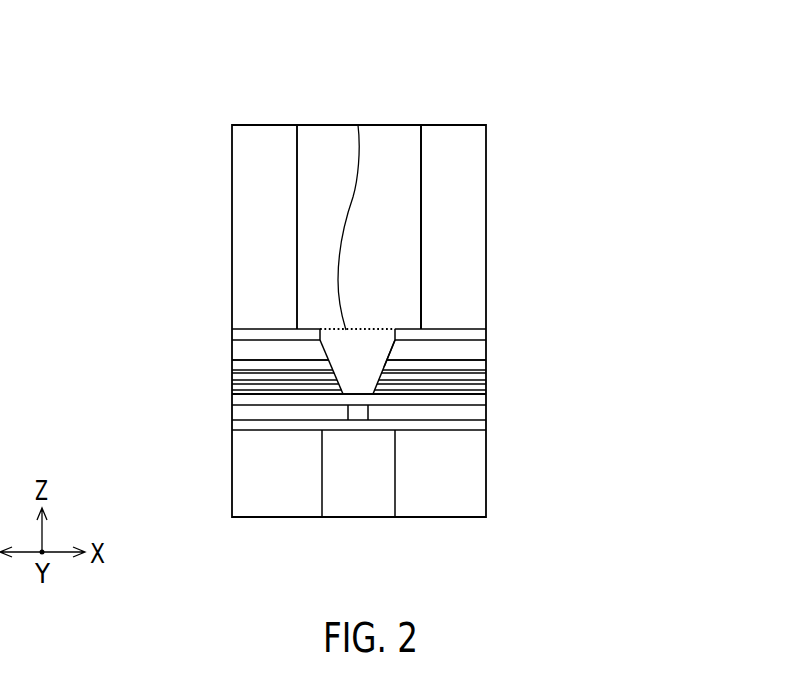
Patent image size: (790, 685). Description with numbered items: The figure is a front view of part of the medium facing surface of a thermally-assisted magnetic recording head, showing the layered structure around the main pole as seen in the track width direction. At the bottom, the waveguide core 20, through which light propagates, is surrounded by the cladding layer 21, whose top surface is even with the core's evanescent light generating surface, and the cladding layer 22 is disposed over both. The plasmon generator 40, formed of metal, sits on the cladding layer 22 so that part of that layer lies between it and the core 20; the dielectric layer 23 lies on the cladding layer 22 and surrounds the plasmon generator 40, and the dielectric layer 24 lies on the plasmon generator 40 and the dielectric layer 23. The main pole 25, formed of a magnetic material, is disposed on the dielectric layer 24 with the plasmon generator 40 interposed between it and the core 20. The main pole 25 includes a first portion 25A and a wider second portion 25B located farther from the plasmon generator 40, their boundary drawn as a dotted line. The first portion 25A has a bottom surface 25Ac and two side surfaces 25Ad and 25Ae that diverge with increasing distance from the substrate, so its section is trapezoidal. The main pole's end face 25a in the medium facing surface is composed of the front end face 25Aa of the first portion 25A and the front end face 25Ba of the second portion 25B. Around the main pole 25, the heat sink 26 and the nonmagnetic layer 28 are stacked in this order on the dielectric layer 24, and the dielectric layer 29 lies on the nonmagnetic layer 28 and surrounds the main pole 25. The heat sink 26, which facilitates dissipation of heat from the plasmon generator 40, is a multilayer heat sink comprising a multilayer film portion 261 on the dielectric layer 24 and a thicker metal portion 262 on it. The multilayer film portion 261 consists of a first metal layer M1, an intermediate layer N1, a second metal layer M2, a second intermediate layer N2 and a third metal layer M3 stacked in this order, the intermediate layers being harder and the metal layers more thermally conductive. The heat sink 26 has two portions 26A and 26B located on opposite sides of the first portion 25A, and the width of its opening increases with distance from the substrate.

The core 20 is at (337, 512).
The cladding layer 21 is at (486, 477).
The cladding layer 22 is at (486, 425).
The dielectric layer 23 is at (486, 412).
The dielectric layer 24 is at (486, 399).
The main pole 25 is at (432, 55).
The first portion 25A is at (358, 125).
The second portion 25B is at (400, 127).
The end face 25a is at (570, 212).
The front end face 25Aa is at (395, 347).
The front end face 25Ba is at (408, 247).
The bottom surface 25Ac is at (368, 394).
The side surface 25Ad is at (320, 352).
The side surface 25Ae is at (387, 357).
The heat sink 26 is at (359, 377).
The multilayer film portion 261 is at (487, 363).
The metal portion 262 is at (242, 346).
The nonmagnetic layer 28 is at (486, 333).
The dielectric layer 29 is at (486, 193).
The plasmon generator 40 is at (358, 415).
The portion of heat sink 26A is at (288, 407).
The portion of heat sink 26B is at (472, 408).
The first metal layer M1 is at (240, 388).
The second metal layer M2 is at (238, 380).
The third metal layer M3 is at (250, 364).
The intermediate layer N1 is at (263, 382).
The second intermediate layer N2 is at (248, 371).